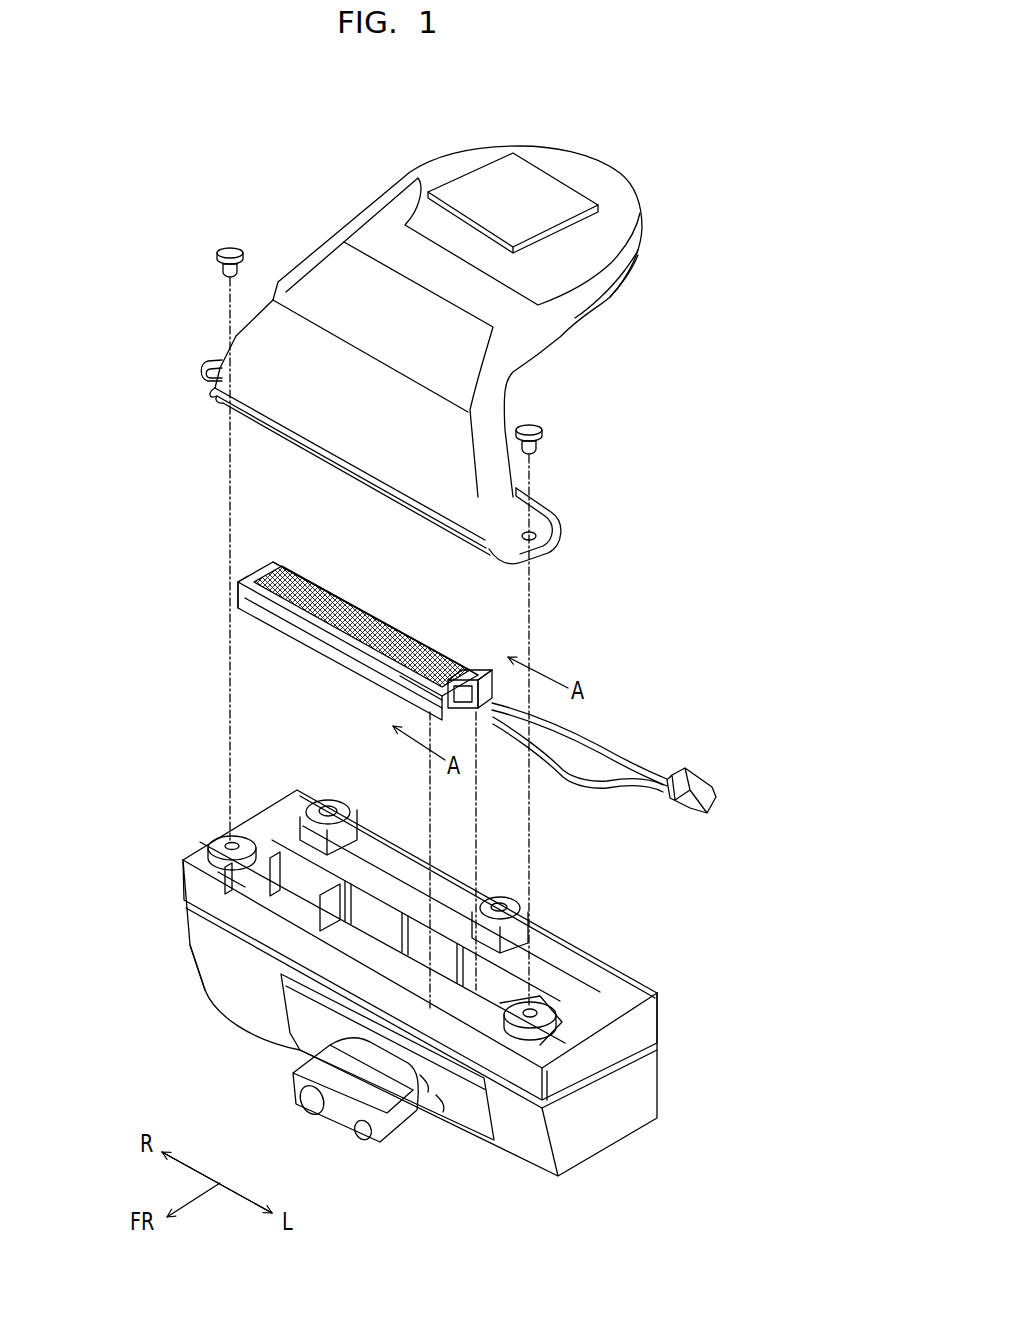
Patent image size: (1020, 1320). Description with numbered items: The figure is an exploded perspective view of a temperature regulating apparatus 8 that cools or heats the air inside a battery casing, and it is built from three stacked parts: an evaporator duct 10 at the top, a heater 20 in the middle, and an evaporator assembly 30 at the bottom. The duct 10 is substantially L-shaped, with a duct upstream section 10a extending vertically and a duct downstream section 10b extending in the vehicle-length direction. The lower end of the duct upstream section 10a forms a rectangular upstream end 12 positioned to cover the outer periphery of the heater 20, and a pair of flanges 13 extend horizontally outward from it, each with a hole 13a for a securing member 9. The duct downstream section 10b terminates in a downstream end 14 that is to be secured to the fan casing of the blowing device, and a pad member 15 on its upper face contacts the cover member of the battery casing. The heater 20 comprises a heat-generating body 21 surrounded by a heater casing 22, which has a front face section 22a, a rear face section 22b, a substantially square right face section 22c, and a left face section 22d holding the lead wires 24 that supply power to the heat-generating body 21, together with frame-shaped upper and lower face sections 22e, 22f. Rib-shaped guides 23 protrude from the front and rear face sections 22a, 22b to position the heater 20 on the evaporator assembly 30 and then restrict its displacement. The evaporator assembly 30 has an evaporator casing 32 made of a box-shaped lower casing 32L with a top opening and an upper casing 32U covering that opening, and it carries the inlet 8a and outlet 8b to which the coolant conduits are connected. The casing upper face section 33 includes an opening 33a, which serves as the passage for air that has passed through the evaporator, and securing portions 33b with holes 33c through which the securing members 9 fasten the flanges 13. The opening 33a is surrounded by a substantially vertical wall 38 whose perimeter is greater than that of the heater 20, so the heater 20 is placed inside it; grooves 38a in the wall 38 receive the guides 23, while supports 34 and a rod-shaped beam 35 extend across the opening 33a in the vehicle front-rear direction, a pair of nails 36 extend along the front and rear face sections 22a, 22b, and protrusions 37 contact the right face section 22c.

The temperature regulating apparatus 8 is at (712, 487).
The inlet 8a is at (313, 1106).
The outlet 8b is at (362, 1133).
The securing member 9 is at (233, 247).
The evaporator duct 10 is at (126, 150).
The duct upstream section 10a is at (296, 398).
The duct downstream section 10b is at (386, 243).
The upstream end 12 is at (300, 452).
The flange 13 is at (204, 366).
The hole 13a is at (556, 540).
The downstream end 14 is at (606, 303).
The pad member 15 is at (530, 184).
The heater 20 is at (218, 552).
The heat-generating body 21 is at (290, 580).
The heater casing 22 is at (287, 648).
The front face section 22a is at (325, 650).
The rear face section 22b is at (413, 623).
The right face section 22c is at (245, 578).
The left face section 22d is at (488, 712).
The upper face section 22e is at (341, 606).
The lower face section 22f is at (390, 686).
The guide 23 is at (471, 667).
The lead wires 24 is at (620, 775).
The evaporator assembly 30 is at (160, 886).
The evaporator casing 32 is at (742, 940).
The upper casing 32U is at (632, 980).
The lower casing 32L is at (665, 1060).
The casing upper face section 33 is at (320, 822).
The opening 33a is at (278, 925).
The securing portion 33b is at (215, 850).
The hole 33c is at (232, 844).
The support 34 is at (335, 903).
The beam 35 is at (253, 870).
The nail 36 is at (392, 942).
The protrusion 37 is at (281, 845).
The wall 38 is at (282, 955).
The groove 38a is at (441, 1100).